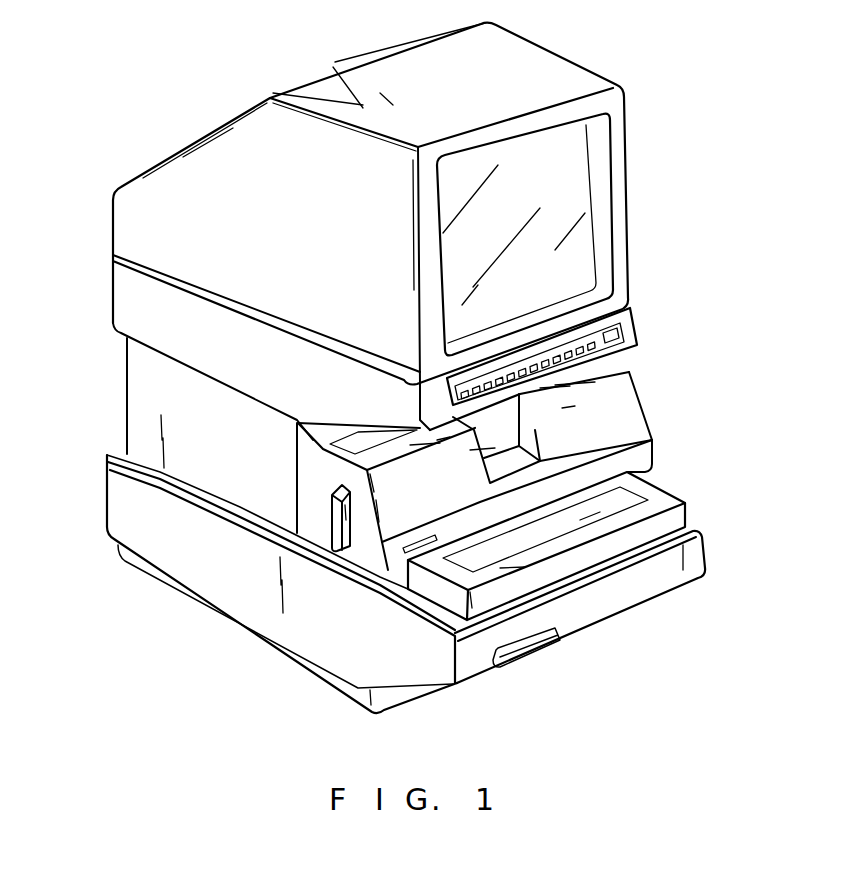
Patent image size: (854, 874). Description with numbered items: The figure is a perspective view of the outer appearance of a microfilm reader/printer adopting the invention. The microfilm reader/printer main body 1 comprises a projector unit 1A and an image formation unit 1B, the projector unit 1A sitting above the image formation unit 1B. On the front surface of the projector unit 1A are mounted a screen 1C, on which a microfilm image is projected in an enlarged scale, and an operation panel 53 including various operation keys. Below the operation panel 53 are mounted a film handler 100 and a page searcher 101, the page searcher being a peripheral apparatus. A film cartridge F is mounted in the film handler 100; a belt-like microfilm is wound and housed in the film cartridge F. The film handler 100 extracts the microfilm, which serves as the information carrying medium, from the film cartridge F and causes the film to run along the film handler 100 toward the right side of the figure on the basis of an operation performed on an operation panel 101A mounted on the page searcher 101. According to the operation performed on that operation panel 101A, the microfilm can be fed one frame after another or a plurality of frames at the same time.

The microfilm reader/printer main body 1 is at (108, 187).
The projector unit 1A is at (305, 83).
The image formation unit 1B is at (121, 520).
The screen 1C is at (563, 178).
The operation panel 53 is at (613, 322).
The film handler 100 is at (632, 410).
The page searcher 101 is at (722, 489).
The operation panel 101A is at (580, 518).
The film cartridge F is at (333, 513).